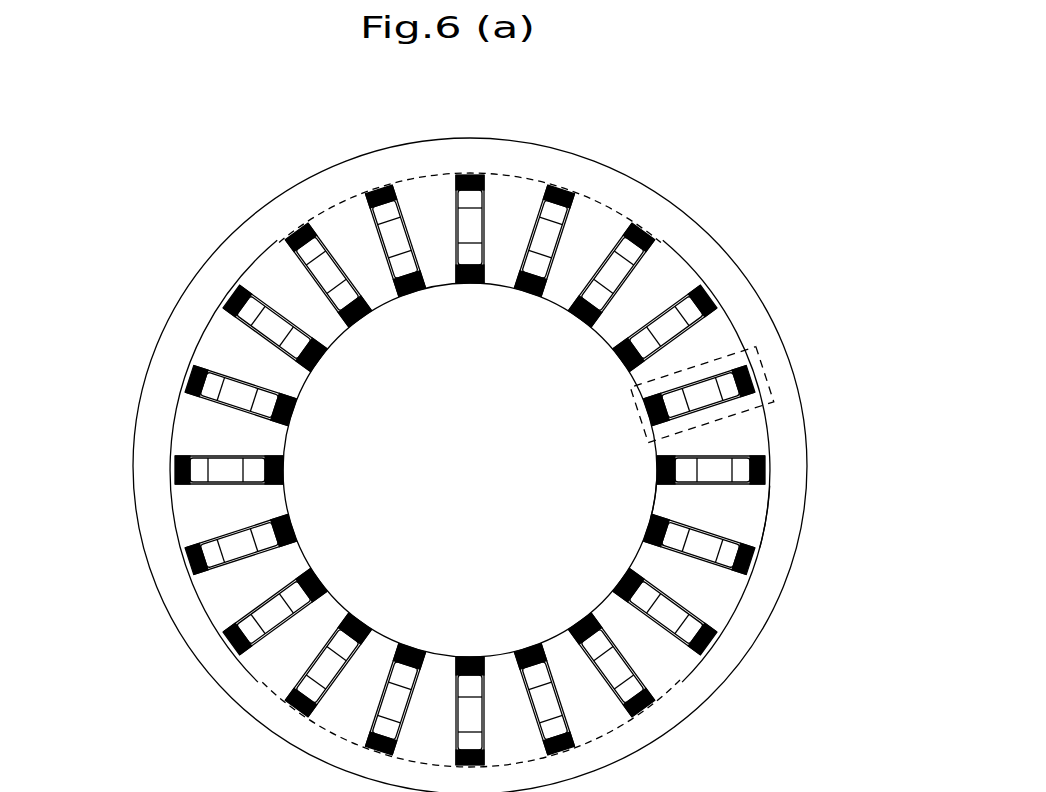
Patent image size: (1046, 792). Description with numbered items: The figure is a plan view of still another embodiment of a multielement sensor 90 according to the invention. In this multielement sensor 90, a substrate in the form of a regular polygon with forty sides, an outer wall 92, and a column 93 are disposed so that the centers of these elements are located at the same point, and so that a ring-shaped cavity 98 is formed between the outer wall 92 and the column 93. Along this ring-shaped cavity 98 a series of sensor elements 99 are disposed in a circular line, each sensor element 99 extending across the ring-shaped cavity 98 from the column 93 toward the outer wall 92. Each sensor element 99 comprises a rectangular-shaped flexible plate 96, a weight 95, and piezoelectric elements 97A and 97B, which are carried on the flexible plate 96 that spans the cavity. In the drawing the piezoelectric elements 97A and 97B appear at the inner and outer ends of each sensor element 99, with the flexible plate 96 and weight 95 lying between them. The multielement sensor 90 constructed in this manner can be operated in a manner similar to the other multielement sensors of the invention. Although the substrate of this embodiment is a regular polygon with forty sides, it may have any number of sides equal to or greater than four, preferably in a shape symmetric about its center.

The multielement sensor 90 is at (128, 363).
The outer wall 92 is at (760, 601).
The column 93 is at (414, 478).
The weight 95 is at (696, 545).
The flexible plate 96 is at (687, 473).
The piezoelectric element 97A is at (626, 358).
The piezoelectric element 97B is at (770, 472).
The ring-shaped cavity 98 is at (734, 509).
The sensor element 99 is at (763, 372).